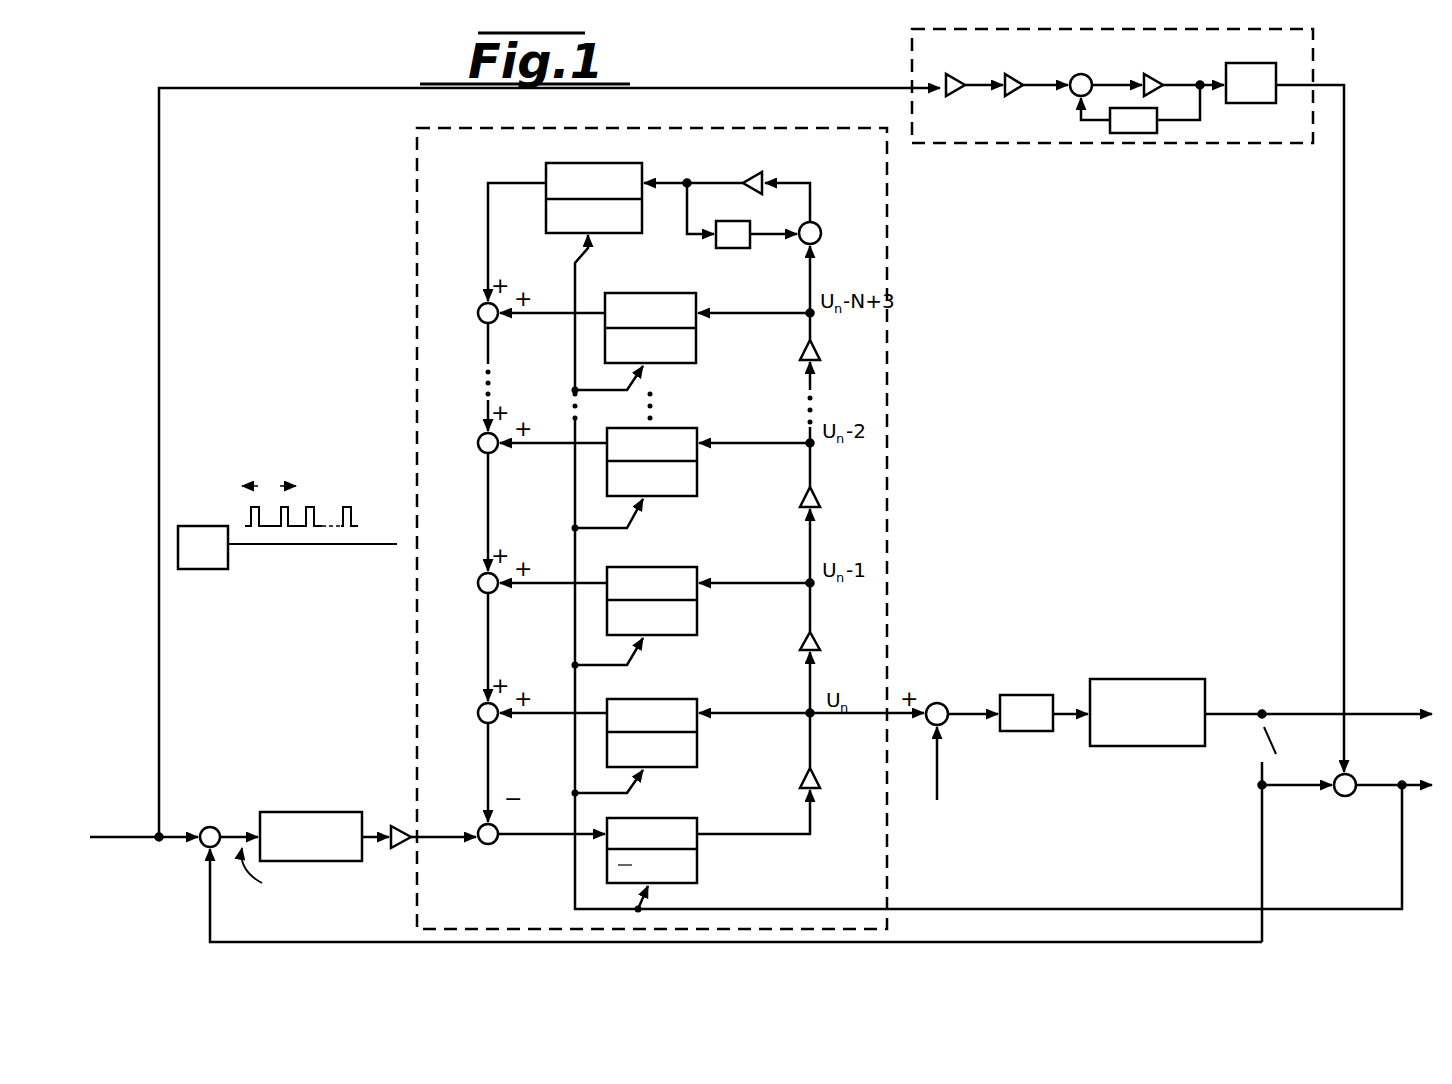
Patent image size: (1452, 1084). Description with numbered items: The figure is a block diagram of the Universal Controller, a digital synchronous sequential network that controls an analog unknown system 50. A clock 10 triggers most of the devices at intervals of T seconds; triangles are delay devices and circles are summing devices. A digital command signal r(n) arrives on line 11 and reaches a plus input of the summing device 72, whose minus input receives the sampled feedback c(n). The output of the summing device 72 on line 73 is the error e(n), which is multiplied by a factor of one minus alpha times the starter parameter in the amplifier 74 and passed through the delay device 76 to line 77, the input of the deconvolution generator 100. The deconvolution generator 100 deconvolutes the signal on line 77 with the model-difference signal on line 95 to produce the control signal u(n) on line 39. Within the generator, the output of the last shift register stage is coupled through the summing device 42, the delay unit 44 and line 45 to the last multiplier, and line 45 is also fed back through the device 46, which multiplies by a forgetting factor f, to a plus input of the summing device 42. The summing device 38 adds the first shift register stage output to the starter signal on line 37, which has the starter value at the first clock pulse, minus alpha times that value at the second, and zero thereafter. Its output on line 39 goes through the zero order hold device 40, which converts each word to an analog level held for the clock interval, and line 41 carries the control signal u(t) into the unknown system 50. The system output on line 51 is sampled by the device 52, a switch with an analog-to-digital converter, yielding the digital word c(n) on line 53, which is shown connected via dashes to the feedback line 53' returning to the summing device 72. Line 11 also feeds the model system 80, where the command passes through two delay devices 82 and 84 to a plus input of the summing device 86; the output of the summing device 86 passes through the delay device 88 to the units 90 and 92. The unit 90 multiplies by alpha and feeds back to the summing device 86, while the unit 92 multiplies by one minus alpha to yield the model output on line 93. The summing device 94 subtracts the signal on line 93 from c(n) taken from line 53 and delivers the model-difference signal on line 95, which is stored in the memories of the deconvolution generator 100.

The clock 10 is at (200, 526).
The line 11 is at (98, 840).
The line 37 is at (940, 790).
The summing device 38 is at (940, 703).
The line 39 is at (968, 720).
The zero order hold device 40 is at (1022, 695).
The line 41 is at (1074, 720).
The summing device 42 is at (820, 228).
The delay unit 44 is at (757, 172).
The line 45 is at (727, 183).
The device 46 is at (737, 248).
The unknown system 50 is at (1142, 679).
The line 51 is at (1230, 714).
The device 52 is at (1270, 742).
The digital output line 53 is at (1296, 815).
The feedback line 53' is at (736, 895).
The summing device 72 is at (222, 818).
The line 73 is at (261, 853).
The amplifier 74 is at (306, 812).
The delay device 76 is at (400, 826).
The line 77 is at (416, 845).
The model system 80 is at (912, 38).
The delay device 82 is at (955, 74).
The delay device 84 is at (1014, 74).
The summing device 86 is at (1086, 74).
The delay device 88 is at (1156, 74).
The unit 90 is at (1157, 128).
The unit 92 is at (1238, 63).
The line 93 is at (1344, 488).
The summing device 94 is at (1345, 796).
The line 95 is at (1052, 909).
The deconvolution generator 100 is at (417, 275).